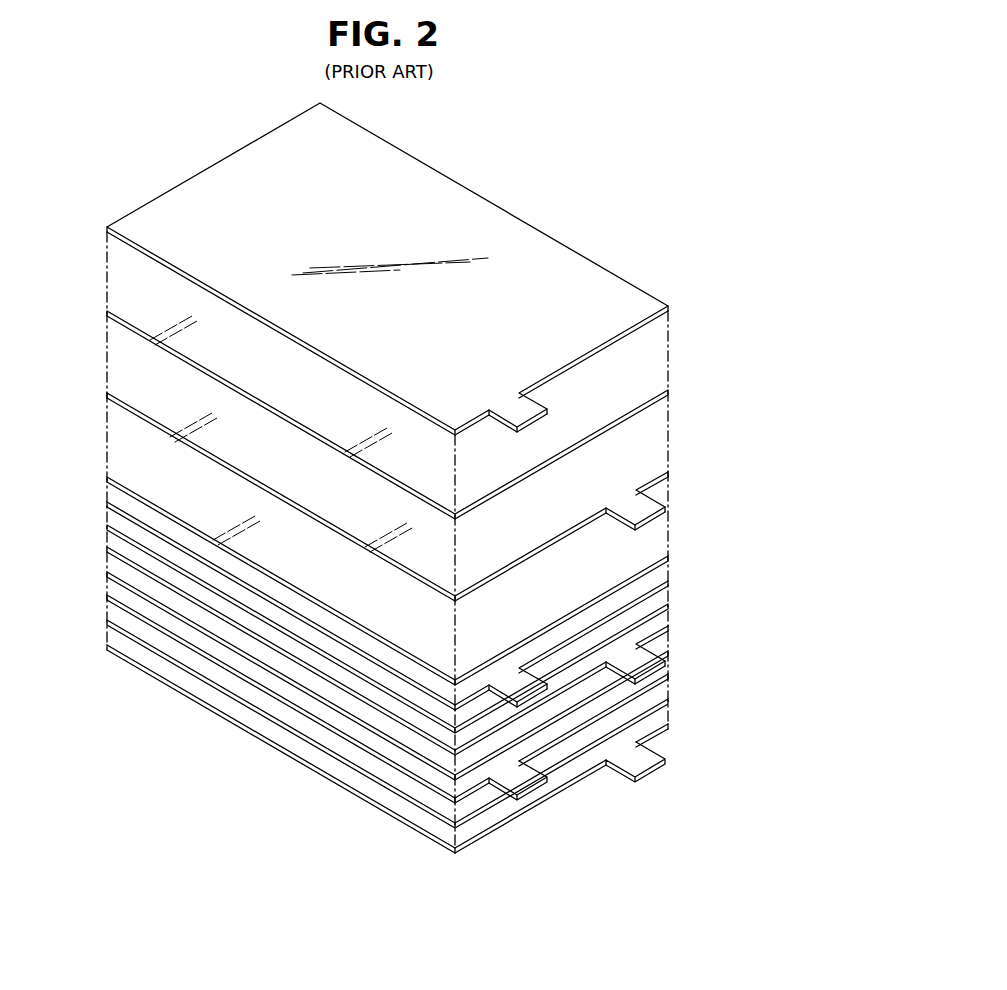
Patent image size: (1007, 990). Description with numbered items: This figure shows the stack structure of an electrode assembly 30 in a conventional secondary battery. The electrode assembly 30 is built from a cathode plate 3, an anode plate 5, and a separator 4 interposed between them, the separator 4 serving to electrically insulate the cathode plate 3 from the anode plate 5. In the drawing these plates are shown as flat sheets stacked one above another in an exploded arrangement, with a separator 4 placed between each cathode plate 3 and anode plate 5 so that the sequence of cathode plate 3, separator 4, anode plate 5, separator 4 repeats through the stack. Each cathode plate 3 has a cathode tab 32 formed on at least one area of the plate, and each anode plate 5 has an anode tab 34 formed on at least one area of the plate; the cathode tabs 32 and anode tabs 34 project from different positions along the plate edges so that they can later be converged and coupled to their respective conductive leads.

The electrode assembly 30 is at (576, 181).
The cathode plate 3 is at (107, 227).
The separator 4 is at (107, 311).
The anode plate 5 is at (107, 393).
The cathode tab 32 is at (528, 778).
The anode tab 34 is at (643, 757).